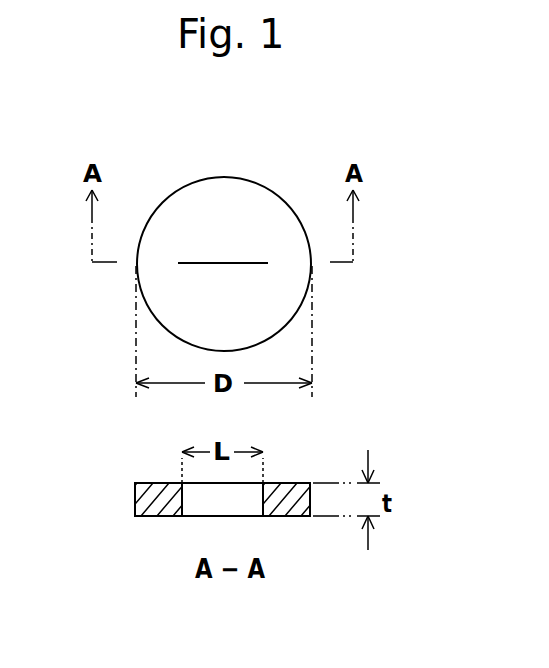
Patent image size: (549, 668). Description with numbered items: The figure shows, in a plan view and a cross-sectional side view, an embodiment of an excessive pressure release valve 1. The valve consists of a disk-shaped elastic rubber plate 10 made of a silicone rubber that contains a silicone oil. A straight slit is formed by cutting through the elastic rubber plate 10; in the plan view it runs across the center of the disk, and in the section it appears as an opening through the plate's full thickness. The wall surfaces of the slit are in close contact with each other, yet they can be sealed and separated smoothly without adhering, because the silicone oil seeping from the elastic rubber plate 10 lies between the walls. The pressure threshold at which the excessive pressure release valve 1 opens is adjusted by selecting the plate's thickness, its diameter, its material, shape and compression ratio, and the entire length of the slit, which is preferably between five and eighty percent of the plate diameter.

The excessive pressure release valve 1 is at (224, 228).
The disk-shaped elastic rubber plate 10 is at (177, 212).